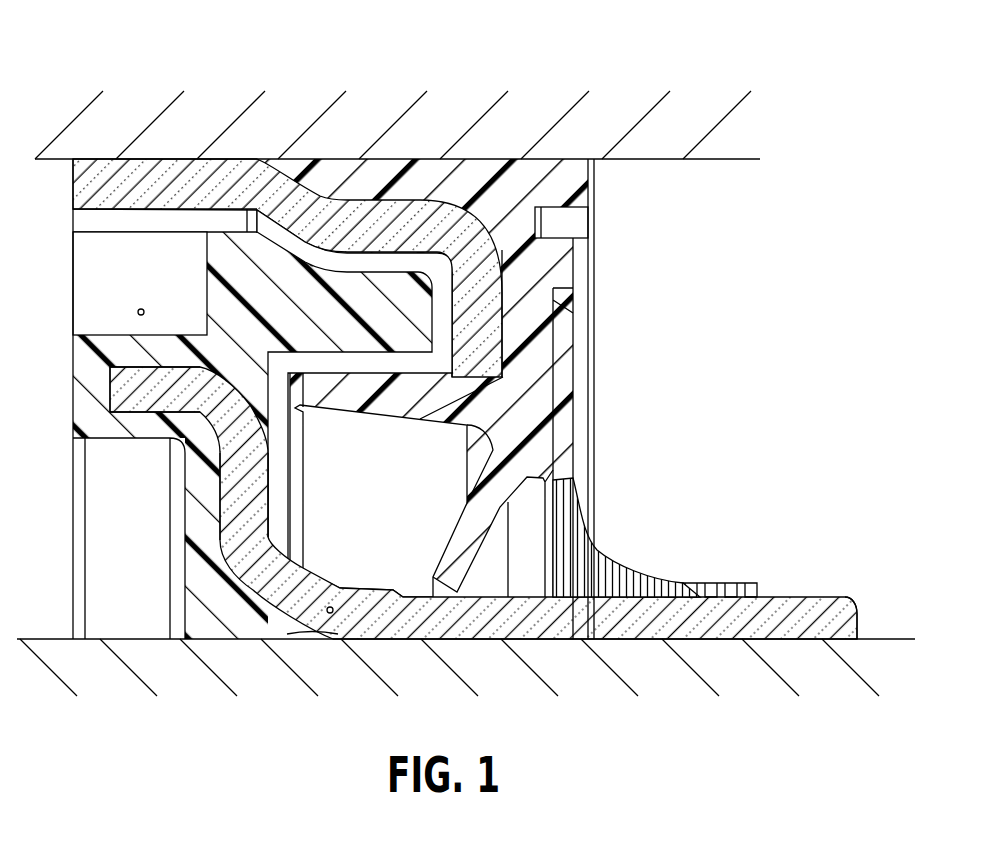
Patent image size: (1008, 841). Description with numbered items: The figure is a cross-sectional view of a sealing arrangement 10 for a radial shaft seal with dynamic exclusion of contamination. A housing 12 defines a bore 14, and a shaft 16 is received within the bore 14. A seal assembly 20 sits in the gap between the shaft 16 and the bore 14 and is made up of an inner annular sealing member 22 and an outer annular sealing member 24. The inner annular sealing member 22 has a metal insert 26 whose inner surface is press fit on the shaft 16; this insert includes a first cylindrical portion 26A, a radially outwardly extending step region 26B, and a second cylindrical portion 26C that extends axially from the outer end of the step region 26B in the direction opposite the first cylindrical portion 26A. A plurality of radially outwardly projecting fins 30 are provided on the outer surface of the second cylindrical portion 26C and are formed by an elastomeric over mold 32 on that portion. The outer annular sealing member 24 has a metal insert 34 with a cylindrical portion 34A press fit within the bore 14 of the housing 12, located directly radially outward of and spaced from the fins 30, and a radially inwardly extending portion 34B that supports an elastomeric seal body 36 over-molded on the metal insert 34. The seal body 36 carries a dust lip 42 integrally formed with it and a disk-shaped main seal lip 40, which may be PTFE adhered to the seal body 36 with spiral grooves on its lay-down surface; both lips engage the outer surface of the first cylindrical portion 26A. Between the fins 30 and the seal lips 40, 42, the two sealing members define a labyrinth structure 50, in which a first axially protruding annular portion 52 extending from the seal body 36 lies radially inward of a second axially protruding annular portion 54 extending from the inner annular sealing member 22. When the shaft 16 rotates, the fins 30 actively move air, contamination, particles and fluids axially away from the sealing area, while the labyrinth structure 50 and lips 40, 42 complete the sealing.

The sealing arrangement 10 is at (770, 100).
The housing 12 is at (270, 122).
The bore 14 is at (719, 159).
The shaft 16 is at (862, 652).
The seal assembly 20 is at (730, 288).
The inner annular sealing member 22 is at (163, 557).
The outer annular sealing member 24 is at (612, 212).
The metal insert 26 is at (333, 608).
The first cylindrical portion 26A is at (643, 608).
The radially outwardly extending step region 26B is at (245, 492).
The second cylindrical portion 26C is at (138, 387).
The radially outwardly projecting fins 30 is at (140, 309).
The elastomeric over mold 32 is at (72, 403).
The metal insert 34 is at (300, 183).
The cylindrical portion 34A is at (175, 175).
The radially inwardly extending portion 34B is at (477, 267).
The seal body 36 is at (597, 378).
The main seal lip 40 is at (597, 540).
The dust lip 42 is at (453, 558).
The labyrinth structure 50 is at (398, 424).
The first axially protruding annular portion 52 is at (387, 397).
The second axially protruding annular portion 54 is at (397, 313).